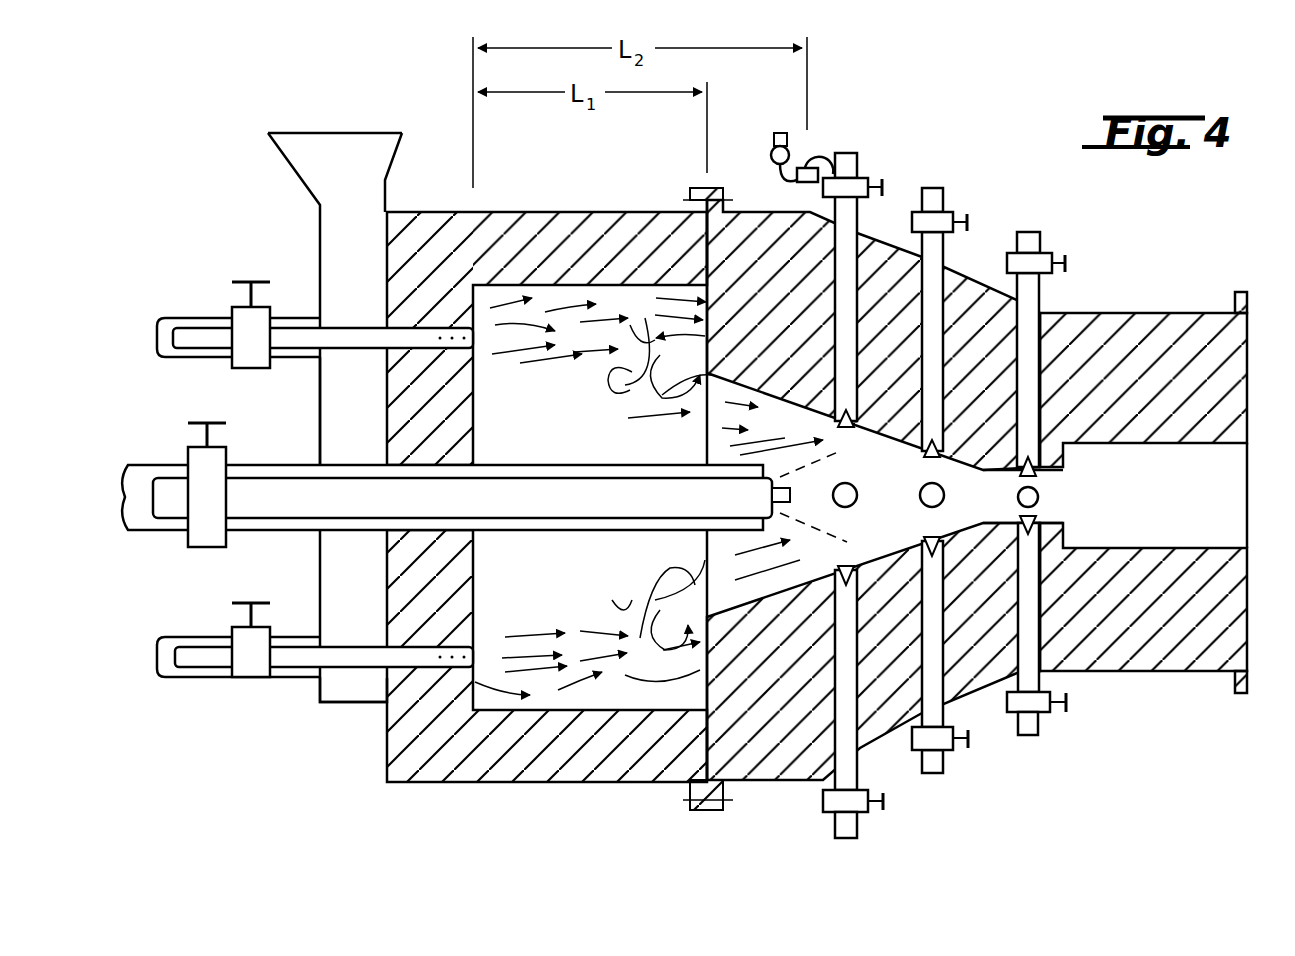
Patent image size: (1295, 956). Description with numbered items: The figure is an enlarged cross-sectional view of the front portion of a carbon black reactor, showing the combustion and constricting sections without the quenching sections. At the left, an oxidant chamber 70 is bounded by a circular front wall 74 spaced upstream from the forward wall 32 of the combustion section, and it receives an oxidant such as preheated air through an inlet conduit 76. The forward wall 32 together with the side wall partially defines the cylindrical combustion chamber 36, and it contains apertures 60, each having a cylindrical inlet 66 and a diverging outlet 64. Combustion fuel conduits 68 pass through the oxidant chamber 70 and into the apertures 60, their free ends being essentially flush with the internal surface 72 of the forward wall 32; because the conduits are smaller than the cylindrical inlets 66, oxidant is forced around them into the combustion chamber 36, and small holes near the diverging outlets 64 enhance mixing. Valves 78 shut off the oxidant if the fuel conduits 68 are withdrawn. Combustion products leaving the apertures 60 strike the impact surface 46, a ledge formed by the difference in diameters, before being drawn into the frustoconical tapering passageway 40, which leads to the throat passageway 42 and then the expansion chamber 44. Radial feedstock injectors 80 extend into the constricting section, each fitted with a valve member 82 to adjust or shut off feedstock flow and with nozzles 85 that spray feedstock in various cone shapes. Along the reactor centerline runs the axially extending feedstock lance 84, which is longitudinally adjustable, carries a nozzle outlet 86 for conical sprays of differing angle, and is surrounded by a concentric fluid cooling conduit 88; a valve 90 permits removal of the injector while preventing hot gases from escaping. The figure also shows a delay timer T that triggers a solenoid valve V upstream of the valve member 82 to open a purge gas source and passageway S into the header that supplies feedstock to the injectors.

The forward wall 32 is at (464, 570).
The combustion chamber 36 is at (576, 428).
The tapering passageway 40 is at (859, 548).
The throat passageway 42 is at (986, 513).
The expansion chamber 44 is at (1140, 513).
The impact surface 46 is at (716, 680).
The apertures 60 is at (474, 356).
The diverging outlets 64 is at (466, 633).
The cylindrical inlets 66 is at (388, 676).
The combustion fuel conduits 68 is at (355, 655).
The oxidant chamber 70 is at (338, 428).
The internal surface 72 is at (474, 437).
The front wall 74 is at (320, 414).
The inlet conduit 76 is at (346, 160).
The valves 78 is at (233, 628).
The radial feedstock injectors 80 is at (1042, 680).
The valve members 82 is at (944, 748).
The axially extending feedstock lance 84 is at (601, 508).
The nozzles 85 is at (925, 456).
The nozzle outlet 86 is at (797, 458).
The fluid cooling conduit 88 is at (597, 531).
The valve 90 is at (920, 770).
The solenoid valve V is at (774, 150).
The delay timer T is at (808, 168).
The purge gas source and passageway S is at (789, 193).